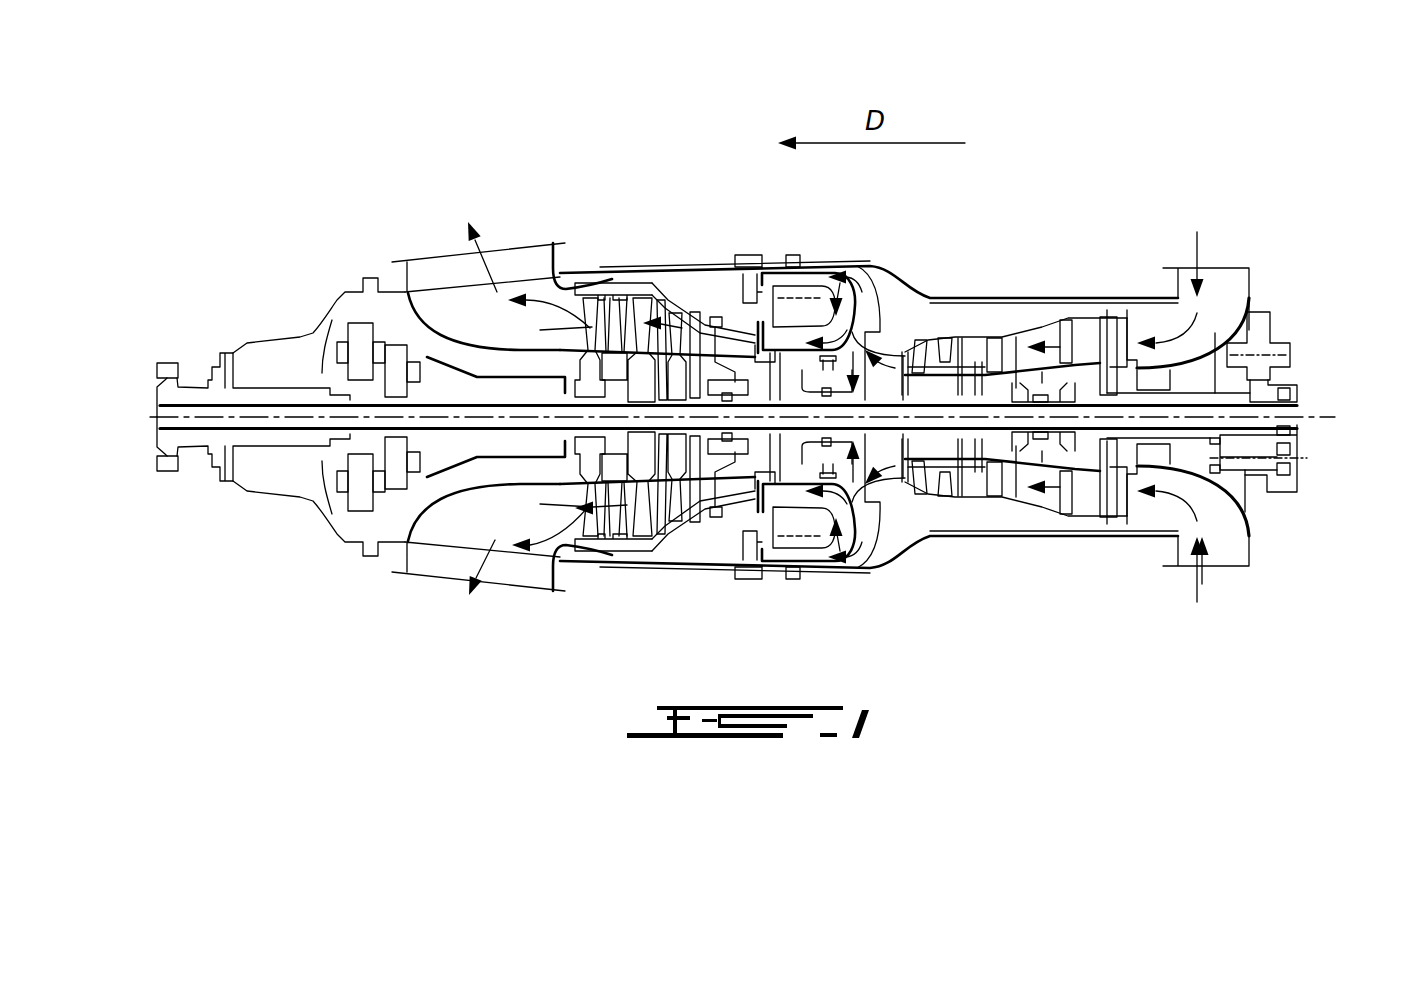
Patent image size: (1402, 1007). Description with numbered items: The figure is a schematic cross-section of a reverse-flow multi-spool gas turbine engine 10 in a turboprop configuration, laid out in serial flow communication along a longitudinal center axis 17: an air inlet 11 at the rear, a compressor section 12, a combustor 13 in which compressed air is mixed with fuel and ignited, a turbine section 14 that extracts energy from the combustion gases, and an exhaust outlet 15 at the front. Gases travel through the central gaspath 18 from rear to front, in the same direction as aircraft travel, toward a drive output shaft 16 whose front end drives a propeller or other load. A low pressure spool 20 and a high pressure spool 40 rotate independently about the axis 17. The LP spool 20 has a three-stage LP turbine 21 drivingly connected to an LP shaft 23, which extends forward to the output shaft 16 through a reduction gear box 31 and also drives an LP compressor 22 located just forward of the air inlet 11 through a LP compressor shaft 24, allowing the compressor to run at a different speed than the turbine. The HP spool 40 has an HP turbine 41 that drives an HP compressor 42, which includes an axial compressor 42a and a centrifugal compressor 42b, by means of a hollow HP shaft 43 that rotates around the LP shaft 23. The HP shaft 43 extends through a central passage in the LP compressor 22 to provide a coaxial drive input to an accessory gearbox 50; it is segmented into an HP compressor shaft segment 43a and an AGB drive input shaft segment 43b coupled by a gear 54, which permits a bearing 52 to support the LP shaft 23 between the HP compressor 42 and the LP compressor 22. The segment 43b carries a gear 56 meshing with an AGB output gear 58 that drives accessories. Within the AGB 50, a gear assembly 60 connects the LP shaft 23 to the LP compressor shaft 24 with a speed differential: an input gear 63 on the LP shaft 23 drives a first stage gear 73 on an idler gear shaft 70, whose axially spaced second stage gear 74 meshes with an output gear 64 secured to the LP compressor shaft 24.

The gas turbine engine 10 is at (232, 150).
The air inlet 11 is at (1248, 244).
The compressor section 12 is at (1152, 253).
The combustor 13 is at (775, 280).
The turbine section 14 is at (772, 232).
The exhaust outlet 15 is at (427, 268).
The drive output shaft 16 is at (172, 372).
The longitudinal center axis 17 is at (158, 421).
The gaspath 18 is at (1075, 465).
The low pressure spool 20 is at (661, 455).
The low pressure turbine 21 is at (595, 458).
The low pressure compressor 22 is at (1112, 470).
The low pressure shaft 23 is at (378, 540).
The low pressure compressor shaft 24 is at (1198, 447).
The reduction gear box 31 is at (350, 294).
The high pressure spool 40 is at (888, 330).
The high pressure turbine 41 is at (755, 335).
The high pressure compressor 42 is at (969, 352).
The axial compressor 42a is at (890, 477).
The high pressure turbine blade 42b is at (967, 477).
The high pressure shaft 43 is at (987, 443).
The HP compressor shaft segment 43a is at (988, 400).
The AGB drive input shaft segment 43b is at (1085, 400).
The accessory gearbox 50 is at (1293, 303).
The bearing 52 is at (1057, 443).
The gear 54 is at (1067, 387).
The gear 56 is at (1263, 386).
The AGB output gear 58 is at (1282, 345).
The gear assembly 60 is at (1278, 495).
The input gear 63 is at (1292, 395).
The output gear 64 is at (1240, 318).
The idler gear shaft 70 is at (1247, 514).
The first stage gear 73 is at (1298, 458).
The second stage gear 74 is at (1218, 472).